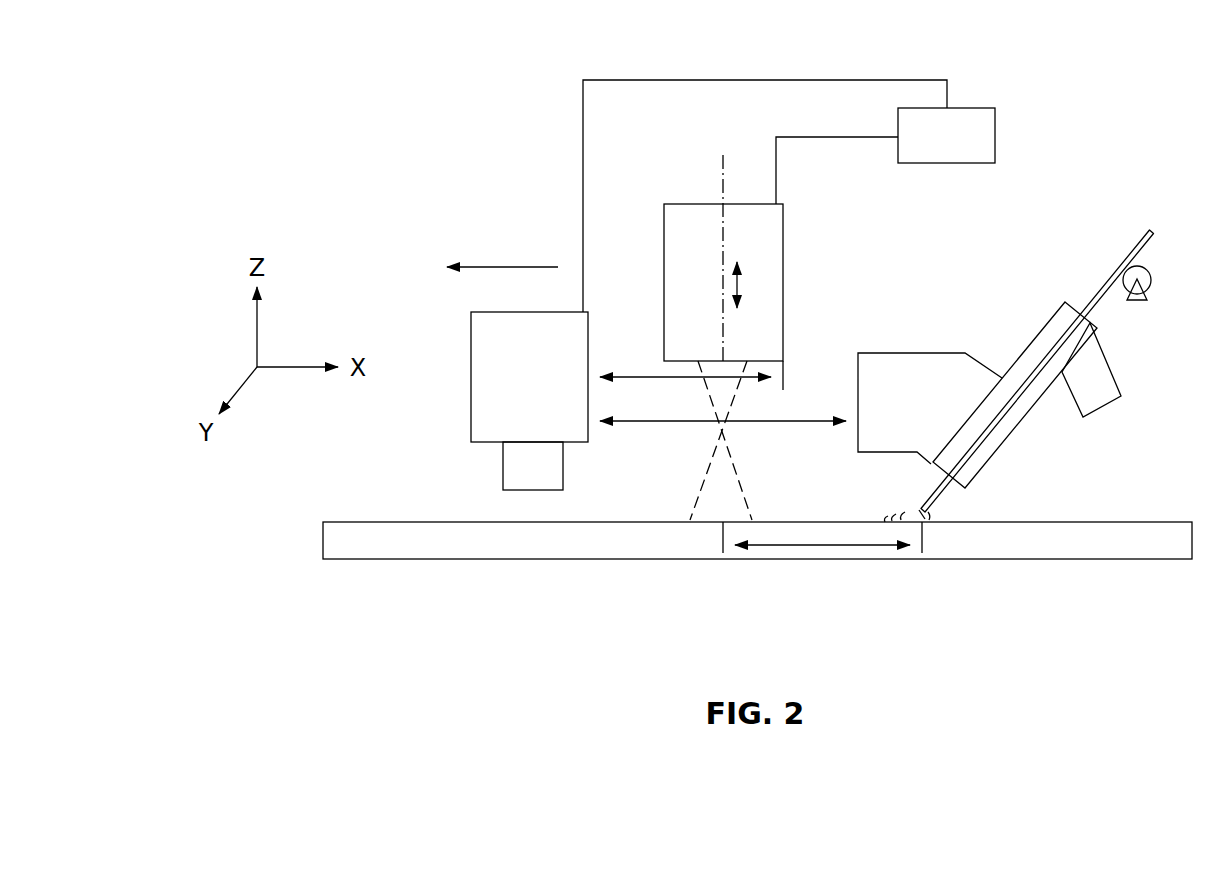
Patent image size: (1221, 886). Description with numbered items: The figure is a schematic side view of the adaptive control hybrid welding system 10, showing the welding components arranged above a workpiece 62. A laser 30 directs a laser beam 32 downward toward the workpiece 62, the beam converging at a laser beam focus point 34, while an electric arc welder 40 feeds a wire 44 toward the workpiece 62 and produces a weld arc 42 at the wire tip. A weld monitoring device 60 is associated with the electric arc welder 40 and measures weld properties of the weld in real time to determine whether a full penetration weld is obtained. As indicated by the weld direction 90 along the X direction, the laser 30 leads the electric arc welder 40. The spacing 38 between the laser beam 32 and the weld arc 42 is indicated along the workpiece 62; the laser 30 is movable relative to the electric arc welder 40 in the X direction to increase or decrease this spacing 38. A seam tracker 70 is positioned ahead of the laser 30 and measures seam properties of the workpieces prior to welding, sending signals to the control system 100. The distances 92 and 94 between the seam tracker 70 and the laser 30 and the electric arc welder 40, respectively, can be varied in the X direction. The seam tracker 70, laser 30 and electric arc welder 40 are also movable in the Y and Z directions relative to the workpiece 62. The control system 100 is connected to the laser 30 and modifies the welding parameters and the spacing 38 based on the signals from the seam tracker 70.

The adaptive hybrid welding system 10 is at (1082, 108).
The laser 30 is at (723, 272).
The laser beam 32 is at (710, 398).
The laser beam focus point 34 is at (724, 432).
The spacing 38 is at (818, 548).
The electric arc welder 40 is at (1027, 300).
The arc 42 is at (924, 512).
The wire 44 is at (925, 505).
The weld monitoring device 60 is at (1106, 341).
The workpiece 62 is at (757, 540).
The seam tracker 70 is at (529, 401).
The weld direction 90 is at (503, 267).
The distance 92 is at (650, 377).
The distance 94 is at (800, 421).
The control system 100 is at (946, 135).